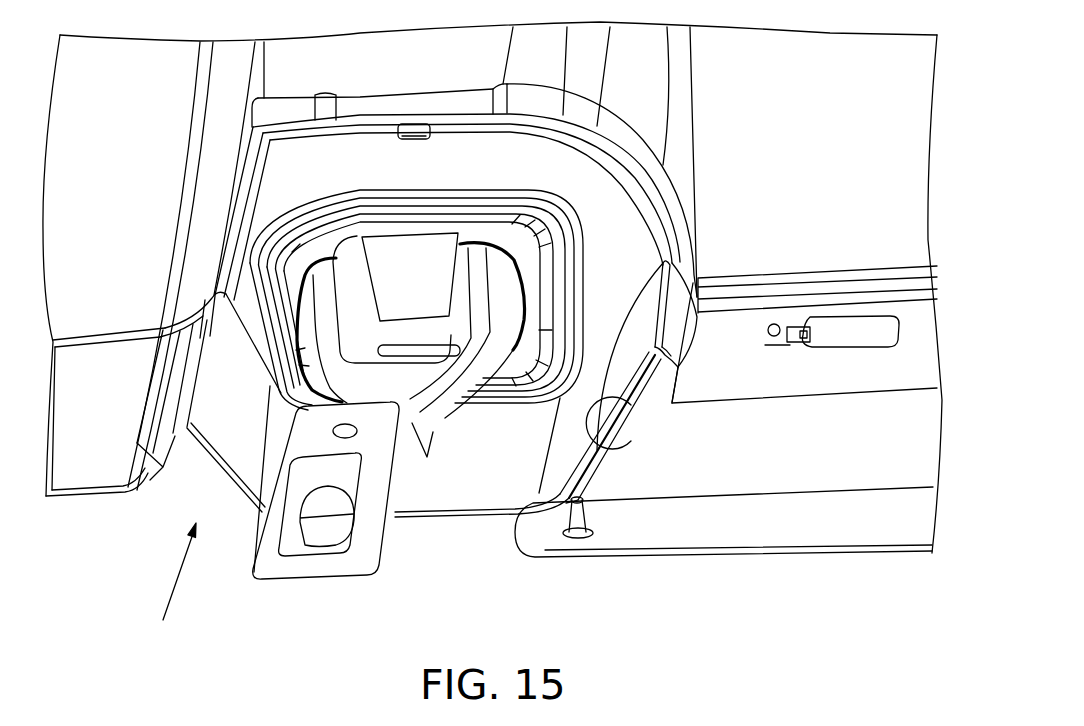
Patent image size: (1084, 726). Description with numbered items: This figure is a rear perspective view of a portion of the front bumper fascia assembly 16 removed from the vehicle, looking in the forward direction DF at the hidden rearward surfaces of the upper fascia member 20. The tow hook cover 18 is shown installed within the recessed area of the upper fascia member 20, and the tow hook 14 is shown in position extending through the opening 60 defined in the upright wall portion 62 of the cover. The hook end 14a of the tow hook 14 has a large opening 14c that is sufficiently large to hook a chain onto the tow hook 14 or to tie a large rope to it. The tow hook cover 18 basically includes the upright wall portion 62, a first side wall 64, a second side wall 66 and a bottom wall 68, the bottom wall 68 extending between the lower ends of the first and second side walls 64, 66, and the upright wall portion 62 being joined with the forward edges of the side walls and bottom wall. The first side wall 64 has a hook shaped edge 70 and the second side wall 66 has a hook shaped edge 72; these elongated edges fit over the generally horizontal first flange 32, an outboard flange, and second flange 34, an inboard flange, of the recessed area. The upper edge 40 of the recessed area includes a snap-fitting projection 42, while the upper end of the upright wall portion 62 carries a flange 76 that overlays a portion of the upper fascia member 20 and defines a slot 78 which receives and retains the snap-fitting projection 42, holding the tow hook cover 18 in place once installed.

The tow hook 14 is at (316, 592).
The hook end 14a is at (495, 270).
The large opening 14c is at (462, 284).
The front bumper fascia assembly 16 is at (705, 335).
The tow hook cover 18 is at (449, 523).
The upper fascia member 20 is at (815, 84).
The first flange 32 is at (157, 457).
The second flange 34 is at (632, 416).
The upper edge 40 is at (372, 96).
The snap-fitting projection 42 is at (411, 140).
The opening 60 is at (567, 318).
The upright wall portion 62 is at (609, 200).
The first side wall 64 is at (222, 420).
The second side wall 66 is at (592, 449).
The bottom wall 68 is at (500, 464).
The hook shaped edge 70 is at (173, 408).
The hook shaped edge 72 is at (678, 333).
The flange 76 is at (472, 101).
The slot 78 is at (400, 127).
The forward direction DF is at (180, 580).